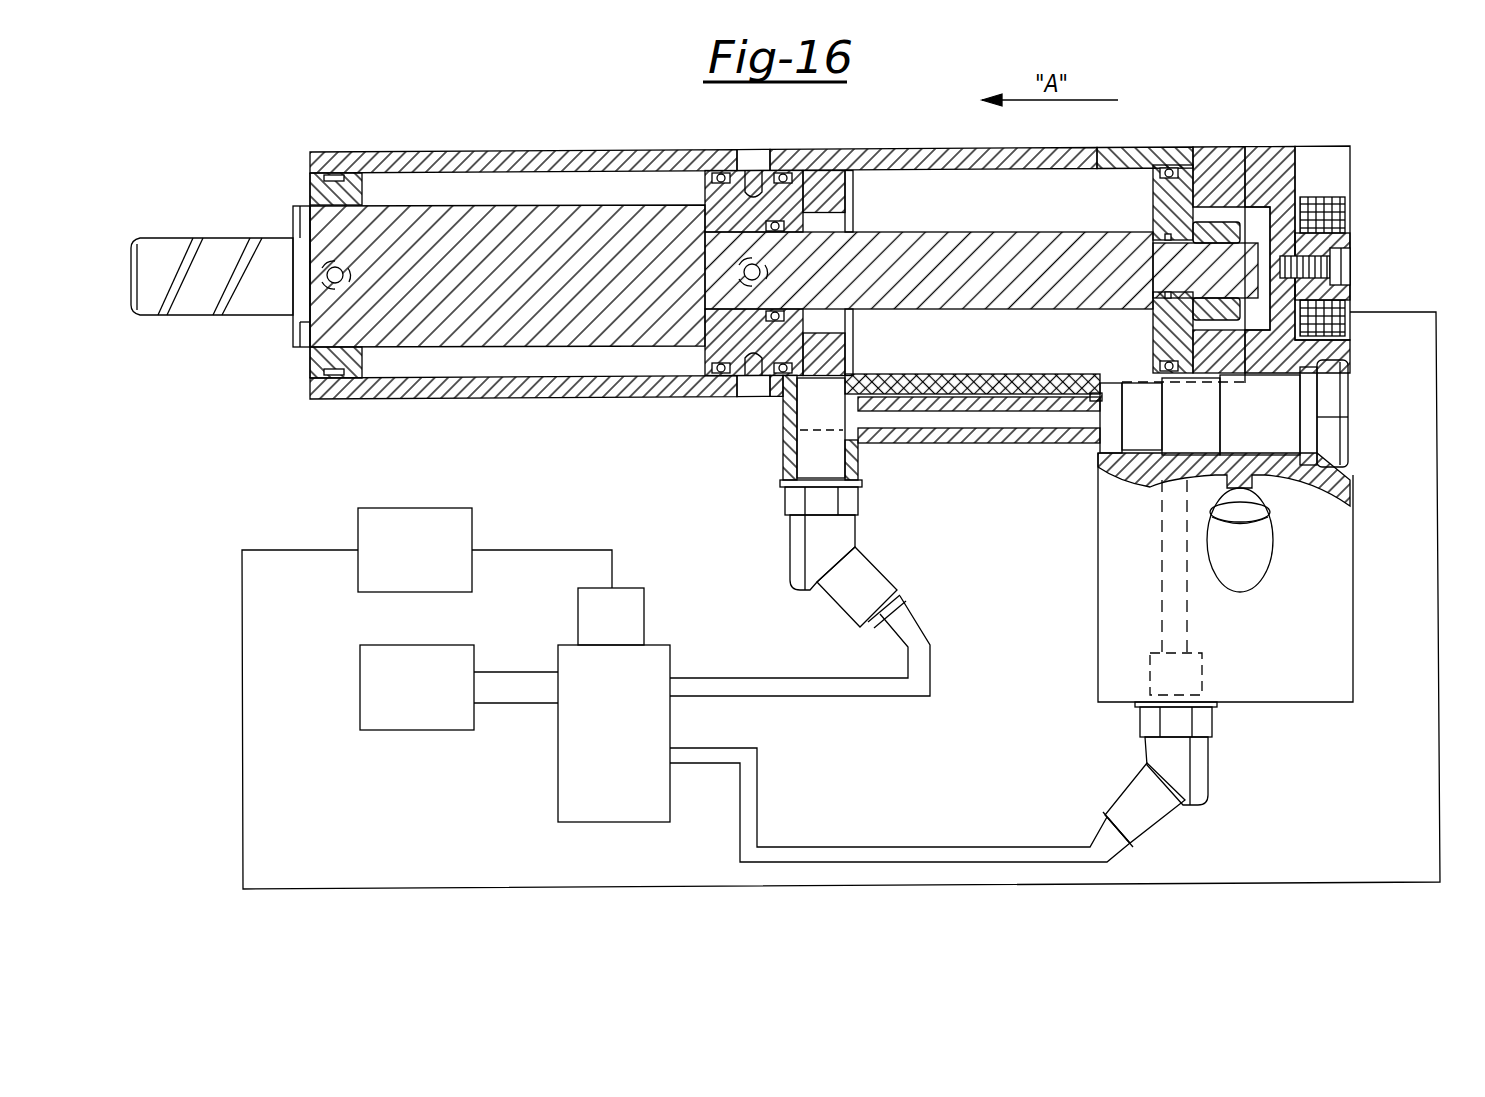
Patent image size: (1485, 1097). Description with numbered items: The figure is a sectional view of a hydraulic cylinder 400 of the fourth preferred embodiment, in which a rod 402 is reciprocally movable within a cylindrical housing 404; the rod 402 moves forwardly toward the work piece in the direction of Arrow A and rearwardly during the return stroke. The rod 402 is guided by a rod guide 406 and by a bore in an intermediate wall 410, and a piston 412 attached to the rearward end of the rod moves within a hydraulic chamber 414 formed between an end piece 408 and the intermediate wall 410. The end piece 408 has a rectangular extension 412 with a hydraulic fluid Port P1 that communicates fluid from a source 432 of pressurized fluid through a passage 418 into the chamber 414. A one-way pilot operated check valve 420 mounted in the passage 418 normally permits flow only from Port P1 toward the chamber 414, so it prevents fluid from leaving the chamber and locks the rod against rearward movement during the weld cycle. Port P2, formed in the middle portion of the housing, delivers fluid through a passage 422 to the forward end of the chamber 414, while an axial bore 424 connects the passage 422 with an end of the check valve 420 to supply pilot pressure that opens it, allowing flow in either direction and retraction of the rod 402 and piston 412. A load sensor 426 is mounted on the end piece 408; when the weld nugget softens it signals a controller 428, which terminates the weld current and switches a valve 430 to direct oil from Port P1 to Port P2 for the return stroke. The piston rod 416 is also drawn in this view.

The hydraulic cylinder 400 is at (1292, 112).
The rod 402 is at (482, 215).
The cylindrical housing 404 is at (883, 147).
The rod guide 406 is at (310, 187).
The end piece 408 is at (1262, 150).
The intermediate wall 410 is at (713, 195).
The piston 412 is at (1155, 198).
The hydraulic chamber 414 is at (1283, 185).
The piston rod 416 is at (998, 212).
The passage 418 is at (1173, 580).
The one-way pilot operated check valve 420 is at (1190, 432).
The passage 422 is at (983, 418).
The axial bore 424 is at (817, 420).
The load sensor 426 is at (1323, 208).
The controller 428 is at (415, 550).
The valve 430 is at (614, 705).
The source of pressurized fluid 432 is at (417, 687).
The hydraulic fluid port P1 is at (1188, 678).
The port P2 is at (830, 467).